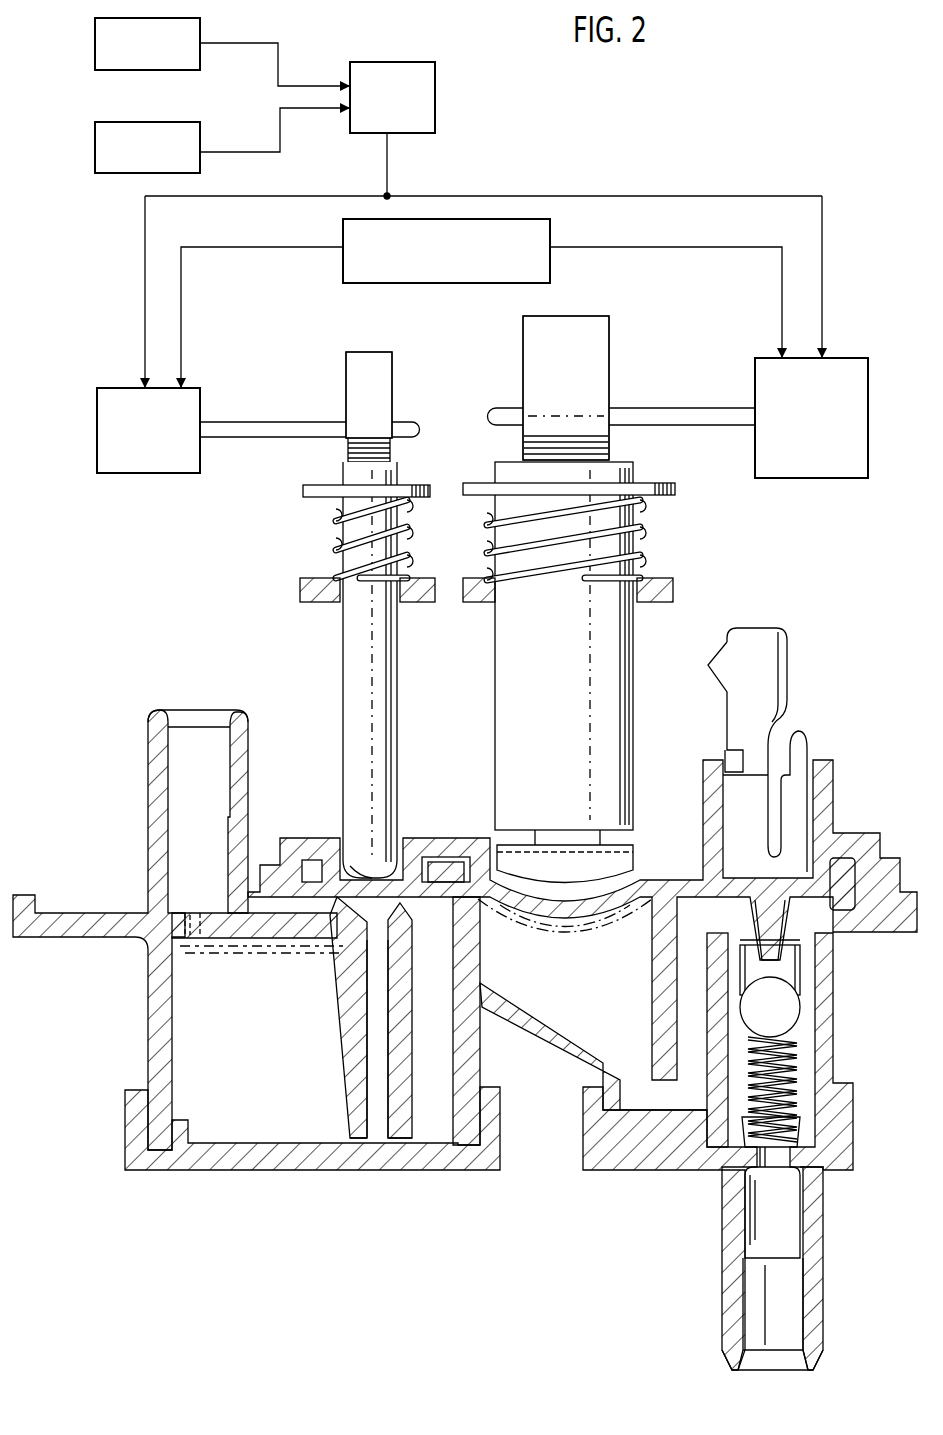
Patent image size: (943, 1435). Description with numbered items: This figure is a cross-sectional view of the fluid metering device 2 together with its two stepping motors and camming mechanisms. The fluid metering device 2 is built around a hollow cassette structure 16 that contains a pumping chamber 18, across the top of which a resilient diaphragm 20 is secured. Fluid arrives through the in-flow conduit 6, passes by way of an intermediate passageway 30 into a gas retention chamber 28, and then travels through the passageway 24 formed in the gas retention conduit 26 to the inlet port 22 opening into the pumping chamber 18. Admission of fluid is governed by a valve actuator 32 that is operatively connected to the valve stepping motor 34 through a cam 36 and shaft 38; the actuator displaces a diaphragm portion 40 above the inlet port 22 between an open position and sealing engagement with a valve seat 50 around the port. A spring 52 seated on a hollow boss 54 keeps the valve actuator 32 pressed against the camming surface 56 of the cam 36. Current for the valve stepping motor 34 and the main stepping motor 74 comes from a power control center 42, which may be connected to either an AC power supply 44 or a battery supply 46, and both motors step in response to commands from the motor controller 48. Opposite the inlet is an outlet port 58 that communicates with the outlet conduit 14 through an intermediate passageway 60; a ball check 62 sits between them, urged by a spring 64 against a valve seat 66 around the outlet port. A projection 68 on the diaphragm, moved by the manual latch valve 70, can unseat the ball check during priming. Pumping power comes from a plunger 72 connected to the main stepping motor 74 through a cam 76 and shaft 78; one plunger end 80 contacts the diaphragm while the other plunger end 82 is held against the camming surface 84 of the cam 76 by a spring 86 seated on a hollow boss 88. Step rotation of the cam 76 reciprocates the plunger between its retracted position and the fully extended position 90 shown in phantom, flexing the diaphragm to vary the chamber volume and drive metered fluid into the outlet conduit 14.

The fluid metering device 2 is at (103, 1200).
The in-flow conduit 6 is at (148, 768).
The outlet conduit 14 is at (812, 1328).
The hollow cassette structure 16 is at (603, 1170).
The pumping chamber 18 is at (598, 1010).
The resilient diaphragm 20 is at (452, 870).
The inlet port 22 is at (376, 915).
The passageway 24 is at (388, 1026).
The gas retention conduit 26 is at (332, 1182).
The gas retention chamber 28 is at (268, 1022).
The intermediate passageway 30 is at (197, 928).
The valve actuator 32 is at (343, 690).
The valve stepping motor 34 is at (128, 473).
The cam 36 is at (350, 410).
The shaft 38 is at (280, 440).
The diaphragm portion 40 is at (370, 866).
The power control center 42 is at (437, 100).
The AC power supply 44 is at (95, 44).
The battery supply 46 is at (95, 153).
The motor controller 48 is at (444, 283).
The valve seat 50 is at (414, 935).
The spring 52 is at (340, 552).
The hollow boss 54 is at (300, 593).
The camming surface 56 is at (358, 378).
The outlet port 58 is at (798, 982).
The intermediate passageway 60 is at (778, 1160).
The ball check 62 is at (800, 1040).
The spring 64 is at (795, 1070).
The valve seat 66 is at (788, 1005).
The projection 68 is at (790, 952).
The manual latch valve 70 is at (765, 690).
The plunger 72 is at (625, 722).
The main stepping motor 74 is at (797, 478).
The cam 76 is at (609, 348).
The shaft 78 is at (690, 408).
The plunger end 80 is at (578, 872).
The plunger end 82 is at (630, 465).
The camming surface 84 is at (530, 383).
The spring 86 is at (645, 540).
The hollow boss 88 is at (660, 582).
The fully extended position 90 is at (588, 945).